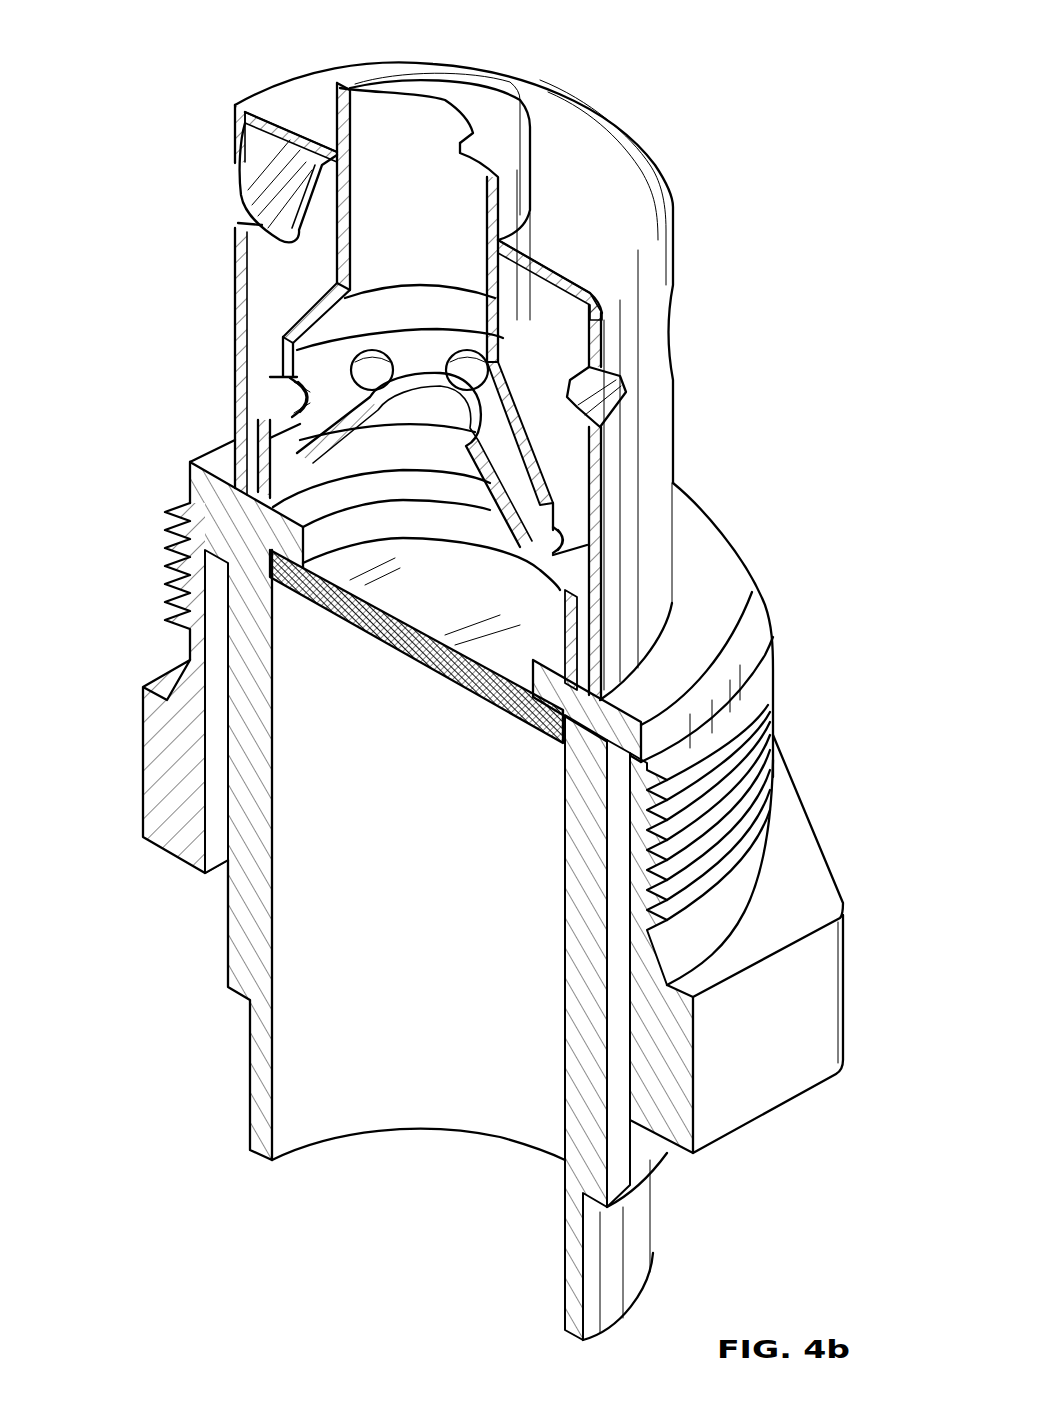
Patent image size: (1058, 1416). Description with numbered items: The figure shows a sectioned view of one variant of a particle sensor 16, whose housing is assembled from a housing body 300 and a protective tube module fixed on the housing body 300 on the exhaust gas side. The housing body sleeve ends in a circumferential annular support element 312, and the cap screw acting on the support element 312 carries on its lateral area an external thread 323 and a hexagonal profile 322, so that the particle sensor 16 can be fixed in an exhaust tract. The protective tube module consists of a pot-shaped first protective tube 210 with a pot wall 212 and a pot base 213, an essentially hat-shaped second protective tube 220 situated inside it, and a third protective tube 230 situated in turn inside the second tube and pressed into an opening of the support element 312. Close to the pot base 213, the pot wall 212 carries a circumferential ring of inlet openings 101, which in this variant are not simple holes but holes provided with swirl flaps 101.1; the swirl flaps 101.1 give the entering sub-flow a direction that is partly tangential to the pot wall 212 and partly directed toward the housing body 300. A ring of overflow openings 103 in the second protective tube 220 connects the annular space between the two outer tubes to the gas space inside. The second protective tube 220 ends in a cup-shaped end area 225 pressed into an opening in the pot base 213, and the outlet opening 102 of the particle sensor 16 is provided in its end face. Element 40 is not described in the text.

The particle sensor 16 is at (798, 305).
The filter plate 40 is at (465, 680).
The inlet openings 101 is at (242, 223).
The swirl flaps 101.1 is at (278, 185).
The outlet opening 102 is at (437, 92).
The overflow openings 103 is at (272, 377).
The first protective tube 210 is at (679, 258).
The pot wall 212 is at (665, 529).
The pot base 213 is at (621, 188).
The second protective tube 220 is at (298, 309).
The cup-shaped end area 225 is at (522, 168).
The third protective tube 230 is at (312, 420).
The housing body 300 is at (834, 795).
The support element 312 is at (200, 486).
The hexagonal profile 322 is at (777, 1078).
The external thread 323 is at (174, 597).